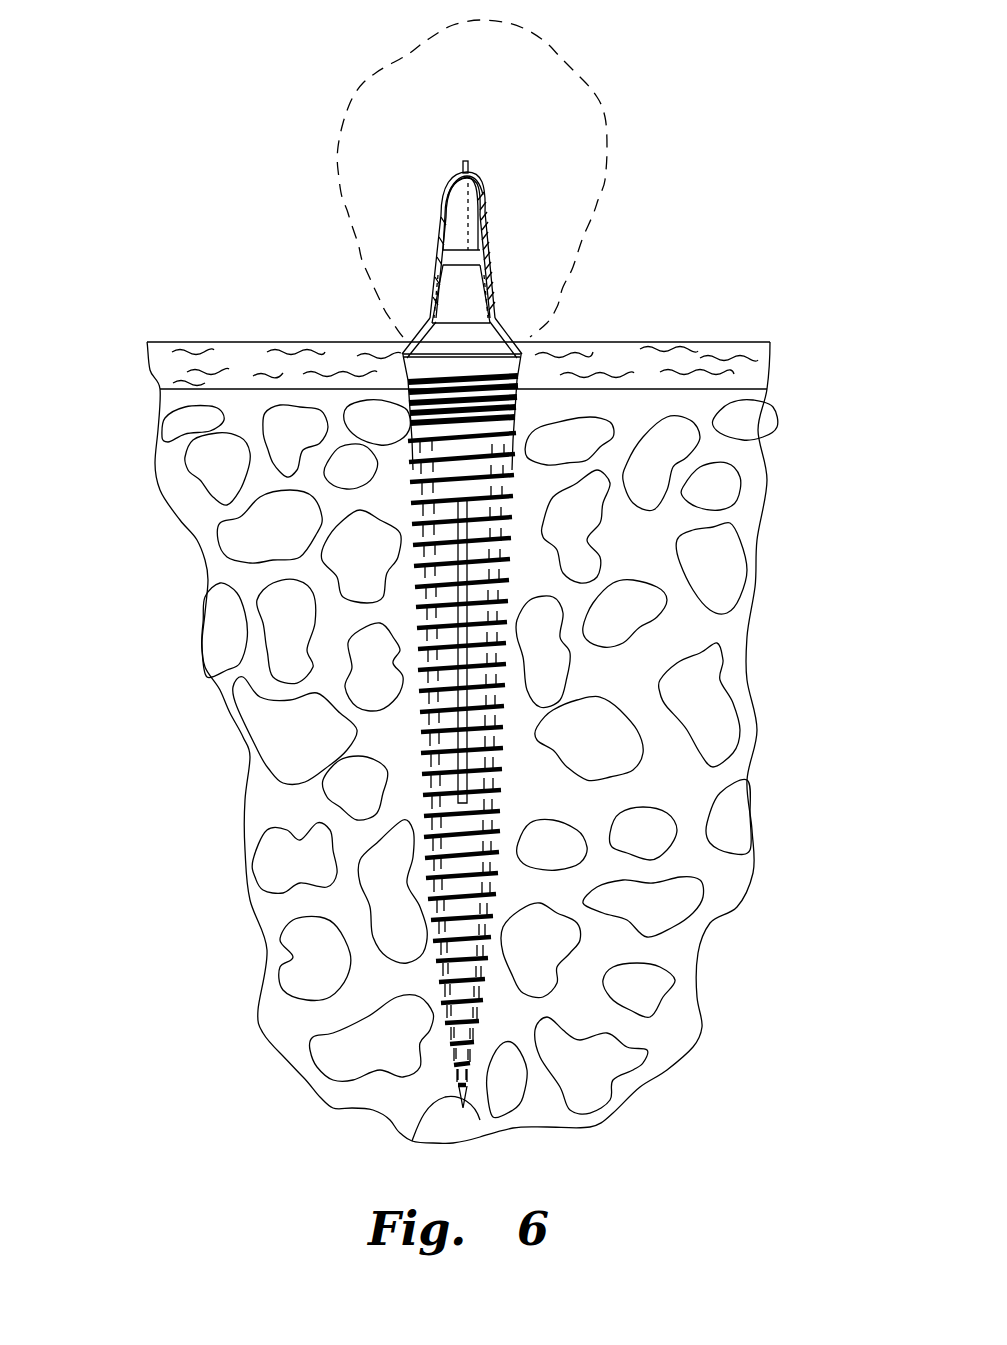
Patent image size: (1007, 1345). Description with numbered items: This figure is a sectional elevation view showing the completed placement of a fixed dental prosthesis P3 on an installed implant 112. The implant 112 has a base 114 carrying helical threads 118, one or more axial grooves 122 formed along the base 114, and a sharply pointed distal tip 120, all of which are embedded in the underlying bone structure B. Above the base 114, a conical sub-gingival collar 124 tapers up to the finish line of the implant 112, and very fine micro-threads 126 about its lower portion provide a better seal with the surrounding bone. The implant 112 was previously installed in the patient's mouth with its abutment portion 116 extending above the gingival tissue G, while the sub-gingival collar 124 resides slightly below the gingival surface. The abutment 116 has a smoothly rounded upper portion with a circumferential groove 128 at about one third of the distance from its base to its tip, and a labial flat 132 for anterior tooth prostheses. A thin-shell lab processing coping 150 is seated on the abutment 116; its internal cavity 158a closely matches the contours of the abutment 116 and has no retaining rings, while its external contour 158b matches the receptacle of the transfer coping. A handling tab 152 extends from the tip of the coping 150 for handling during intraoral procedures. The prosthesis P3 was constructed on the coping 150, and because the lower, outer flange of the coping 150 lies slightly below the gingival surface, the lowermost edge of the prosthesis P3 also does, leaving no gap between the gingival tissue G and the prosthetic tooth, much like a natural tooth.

The dental prosthesis P3 is at (378, 72).
The handling tab 152 is at (468, 160).
The labial flat 132 is at (452, 190).
The external shape and contour 158b is at (486, 204).
The circumferential groove 128 is at (450, 257).
The lab processing coping 150 is at (490, 255).
The abutment portion 116 is at (447, 284).
The internal cavity or recess 158a is at (492, 300).
The sub-gingival collar 124 is at (398, 352).
The gingival tissue G is at (158, 376).
The micro-threads 126 is at (508, 410).
The axial groove 122 is at (434, 552).
The bone structure B is at (228, 570).
The base 114 is at (503, 670).
The implant 112 is at (386, 737).
The helical threads 118 is at (500, 750).
The distal tip 120 is at (405, 1138).